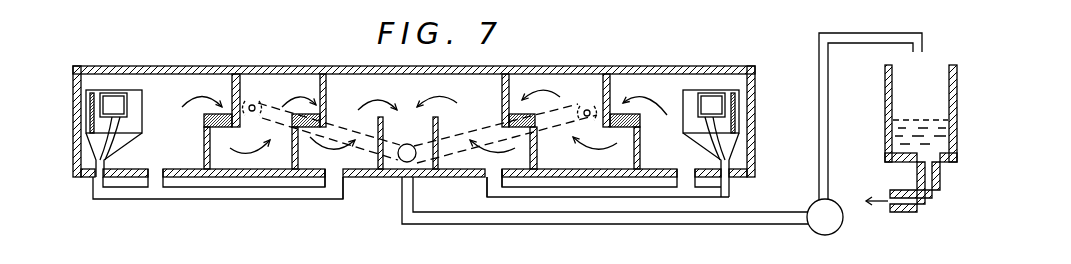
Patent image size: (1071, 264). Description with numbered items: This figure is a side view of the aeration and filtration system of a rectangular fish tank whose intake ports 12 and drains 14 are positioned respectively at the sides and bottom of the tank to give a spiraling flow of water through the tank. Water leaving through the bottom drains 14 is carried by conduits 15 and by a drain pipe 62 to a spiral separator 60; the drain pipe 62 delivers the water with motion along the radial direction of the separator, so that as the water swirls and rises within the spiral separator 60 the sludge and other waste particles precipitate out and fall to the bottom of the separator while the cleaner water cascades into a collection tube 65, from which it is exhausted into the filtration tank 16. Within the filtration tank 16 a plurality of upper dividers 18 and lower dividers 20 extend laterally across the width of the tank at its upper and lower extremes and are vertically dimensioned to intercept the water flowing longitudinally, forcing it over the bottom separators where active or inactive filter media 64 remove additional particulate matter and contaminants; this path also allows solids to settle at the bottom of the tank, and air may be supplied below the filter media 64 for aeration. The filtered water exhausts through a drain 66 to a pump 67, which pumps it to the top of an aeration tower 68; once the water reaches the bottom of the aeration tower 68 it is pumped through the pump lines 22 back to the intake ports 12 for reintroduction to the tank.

The intake ports 12 is at (587, 108).
The drains 14 is at (345, 190).
The conduits 15 is at (226, 200).
The filtration tank 16 is at (74, 118).
The upper dividers 18 is at (241, 99).
The lower dividers 20 is at (204, 127).
The pump lines 22 is at (334, 120).
The spiral separator 60 is at (86, 97).
The drain pipe 62 is at (92, 145).
The filter media 64 is at (219, 128).
The collection tube 65 is at (115, 95).
The drain 66 is at (407, 144).
The pump 67 is at (839, 229).
The aeration tower 68 is at (884, 80).